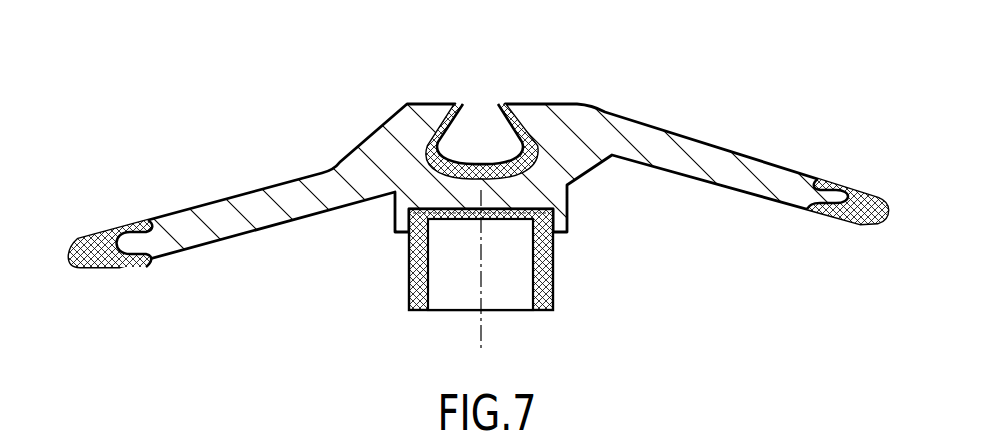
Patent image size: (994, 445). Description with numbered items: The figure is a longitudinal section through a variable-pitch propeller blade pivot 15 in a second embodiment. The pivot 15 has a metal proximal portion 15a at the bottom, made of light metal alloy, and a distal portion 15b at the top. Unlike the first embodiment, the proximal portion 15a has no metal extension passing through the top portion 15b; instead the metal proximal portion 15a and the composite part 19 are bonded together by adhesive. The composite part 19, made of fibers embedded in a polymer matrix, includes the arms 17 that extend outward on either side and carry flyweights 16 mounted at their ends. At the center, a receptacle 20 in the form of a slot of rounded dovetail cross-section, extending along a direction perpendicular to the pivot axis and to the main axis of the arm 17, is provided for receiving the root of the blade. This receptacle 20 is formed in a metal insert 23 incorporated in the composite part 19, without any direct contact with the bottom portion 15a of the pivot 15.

The propeller blade pivot 15 is at (465, 198).
The proximal portion 15a is at (548, 290).
The distal portion 15b is at (553, 102).
The flyweight 16 is at (100, 237).
The arm 17 is at (233, 193).
The composite part 19 is at (377, 147).
The receptacle 20 is at (485, 143).
The metal insert 23 is at (437, 120).